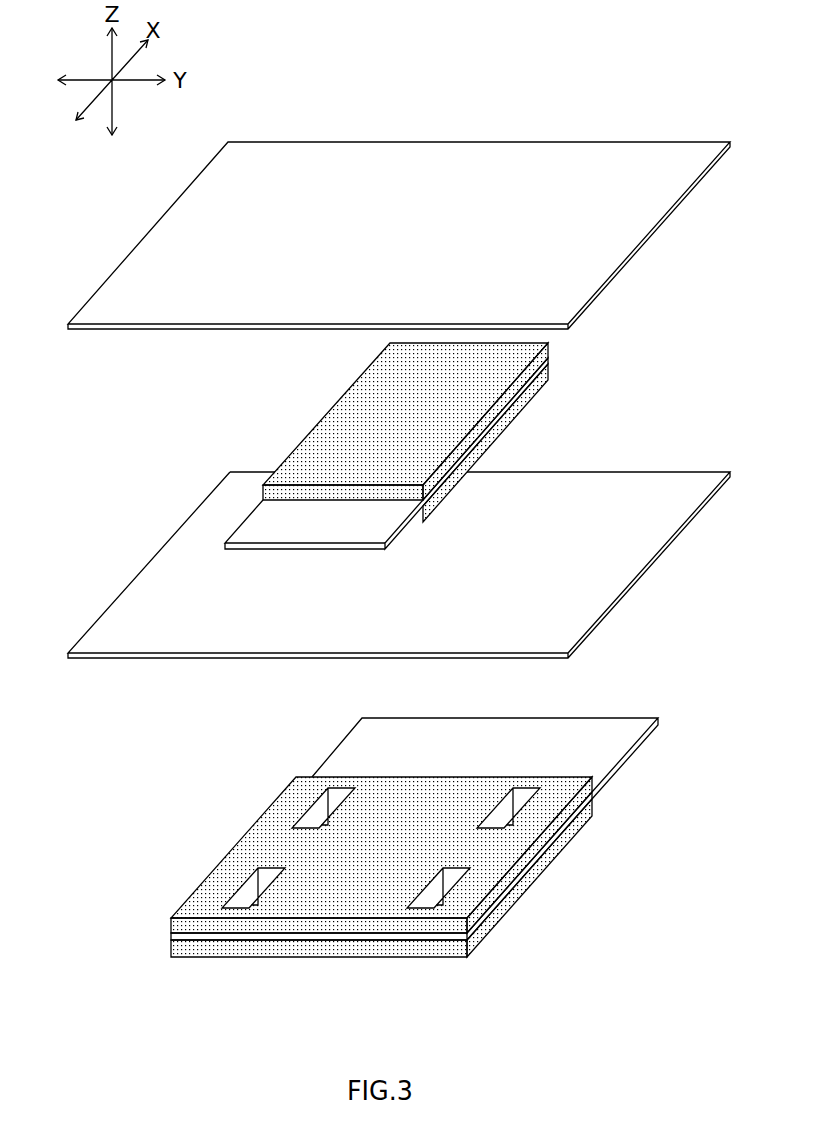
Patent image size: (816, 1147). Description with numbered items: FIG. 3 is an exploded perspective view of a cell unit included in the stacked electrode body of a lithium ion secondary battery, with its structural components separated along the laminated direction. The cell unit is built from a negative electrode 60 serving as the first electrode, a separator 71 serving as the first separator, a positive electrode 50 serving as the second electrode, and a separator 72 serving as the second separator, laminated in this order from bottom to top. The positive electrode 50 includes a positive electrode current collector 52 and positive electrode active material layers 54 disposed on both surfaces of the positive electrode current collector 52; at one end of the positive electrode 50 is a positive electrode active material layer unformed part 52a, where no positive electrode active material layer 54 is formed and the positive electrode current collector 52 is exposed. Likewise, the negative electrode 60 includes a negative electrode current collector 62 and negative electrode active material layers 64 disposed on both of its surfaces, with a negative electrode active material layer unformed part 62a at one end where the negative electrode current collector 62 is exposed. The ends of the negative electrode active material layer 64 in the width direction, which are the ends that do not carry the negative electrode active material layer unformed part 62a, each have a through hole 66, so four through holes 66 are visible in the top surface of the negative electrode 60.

The positive electrode 50 is at (381, 446).
The positive electrode current collector 52 is at (550, 362).
The positive electrode active material layer unformed part 52a is at (258, 522).
The positive electrode active material layer 54 is at (372, 383).
The negative electrode 60 is at (410, 858).
The negative electrode current collector 62 is at (172, 937).
The negative electrode active material layer unformed part 62a is at (610, 745).
The negative electrode active material layer 64 is at (172, 924).
The through hole 66 is at (252, 882).
The separator 71 is at (155, 597).
The separator 72 is at (348, 158).